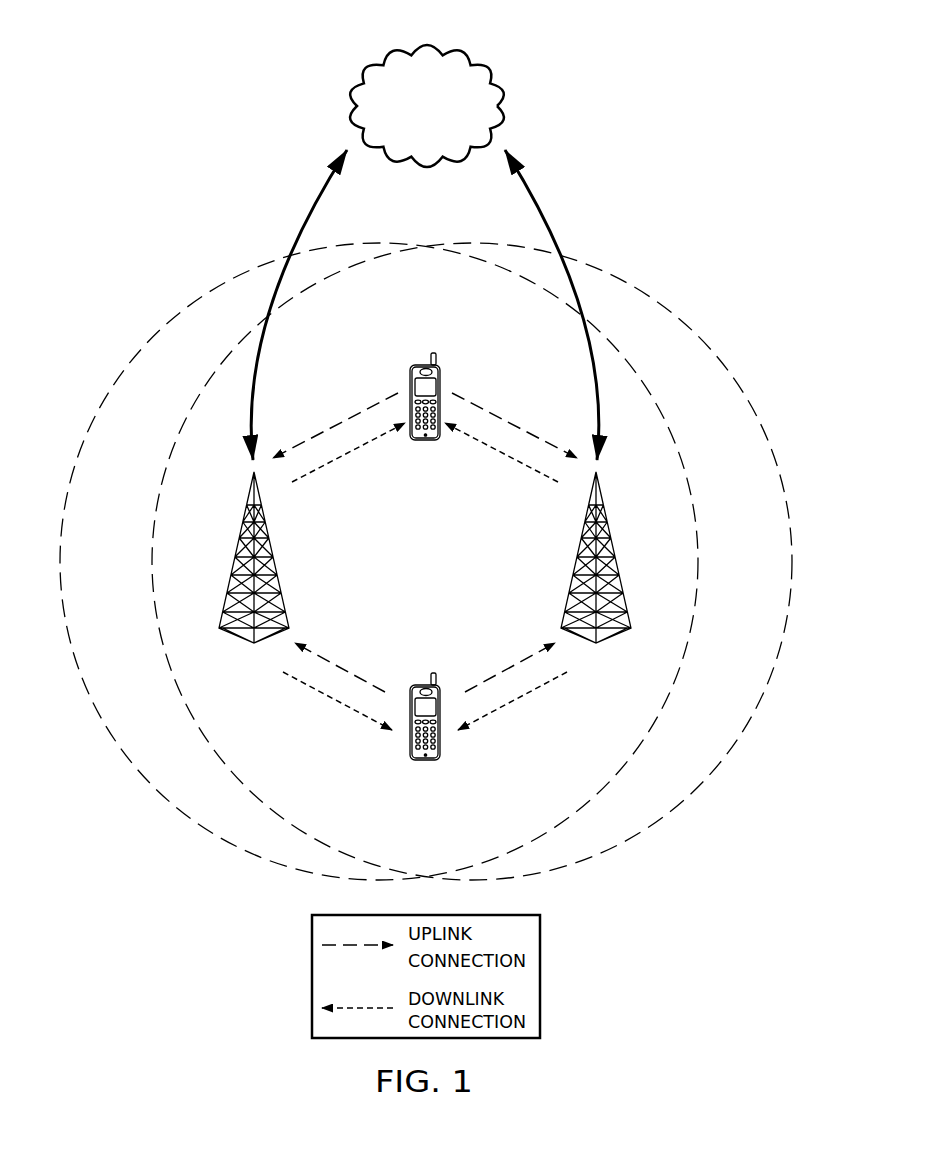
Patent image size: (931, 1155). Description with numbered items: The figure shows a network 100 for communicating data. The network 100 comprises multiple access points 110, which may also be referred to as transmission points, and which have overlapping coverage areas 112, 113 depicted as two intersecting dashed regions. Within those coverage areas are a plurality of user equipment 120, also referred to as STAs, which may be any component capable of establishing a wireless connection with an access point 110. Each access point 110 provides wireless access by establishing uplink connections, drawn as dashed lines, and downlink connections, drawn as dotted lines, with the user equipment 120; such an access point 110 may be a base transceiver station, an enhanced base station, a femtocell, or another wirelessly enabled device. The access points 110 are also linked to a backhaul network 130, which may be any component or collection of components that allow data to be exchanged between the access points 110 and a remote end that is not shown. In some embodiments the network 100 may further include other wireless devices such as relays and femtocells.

The network 100 is at (182, 115).
The access point 110 is at (233, 556).
The coverage area 112 is at (761, 577).
The coverage area 113 is at (129, 577).
The user equipment 120 is at (409, 373).
The backhaul network 130 is at (486, 57).